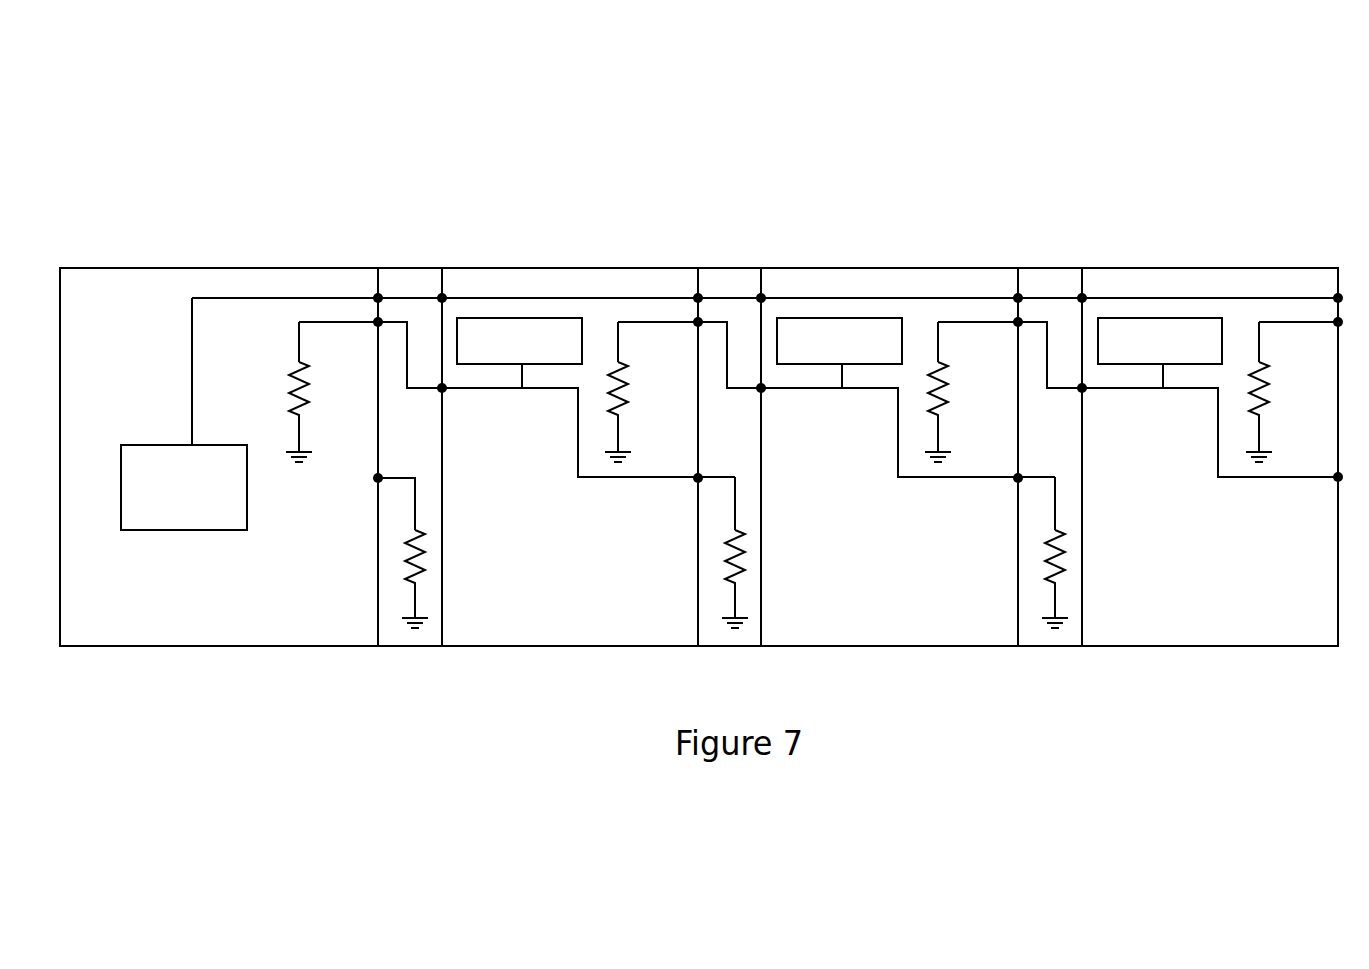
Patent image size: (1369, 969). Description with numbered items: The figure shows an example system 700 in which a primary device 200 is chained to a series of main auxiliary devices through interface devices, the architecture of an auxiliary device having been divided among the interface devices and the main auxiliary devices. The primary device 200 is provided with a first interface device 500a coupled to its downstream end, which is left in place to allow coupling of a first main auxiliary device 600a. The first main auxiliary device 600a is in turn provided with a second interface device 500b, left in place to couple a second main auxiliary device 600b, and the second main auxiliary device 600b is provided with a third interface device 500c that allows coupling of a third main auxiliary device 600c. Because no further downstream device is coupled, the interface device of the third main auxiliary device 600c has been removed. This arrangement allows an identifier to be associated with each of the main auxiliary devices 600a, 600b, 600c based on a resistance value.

The system 700 is at (915, 144).
The primary device 200 is at (260, 268).
The first interface device 500a is at (412, 268).
The first main auxiliary device 600a is at (572, 268).
The second interface device 500b is at (733, 268).
The second main auxiliary device 600b is at (882, 268).
The third interface device 500c is at (1052, 268).
The third main auxiliary device 600c is at (1248, 268).